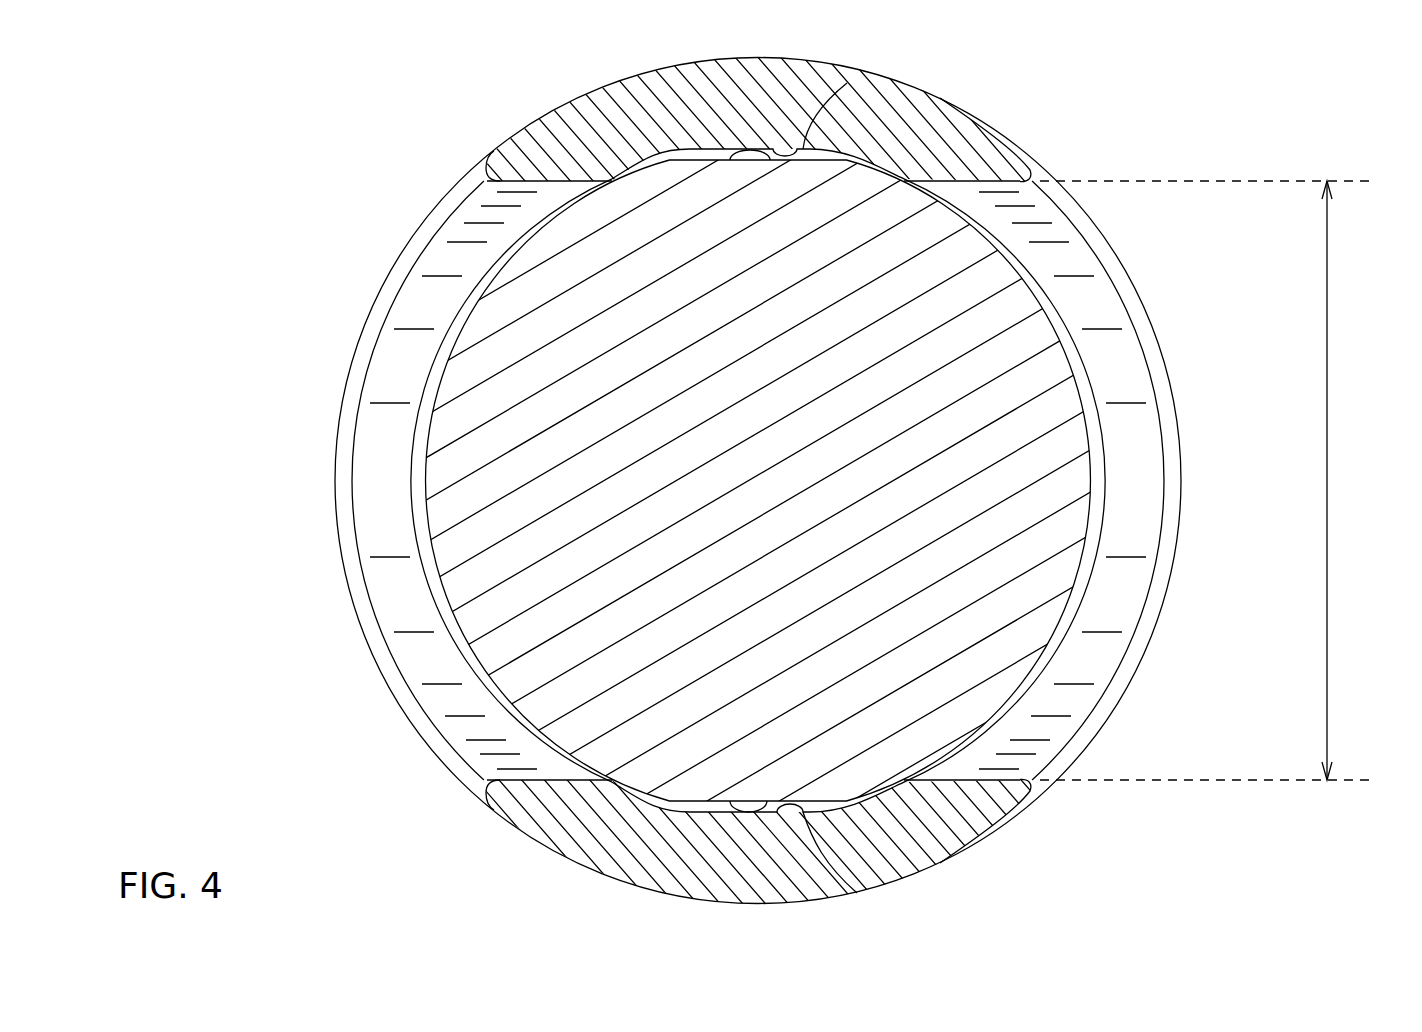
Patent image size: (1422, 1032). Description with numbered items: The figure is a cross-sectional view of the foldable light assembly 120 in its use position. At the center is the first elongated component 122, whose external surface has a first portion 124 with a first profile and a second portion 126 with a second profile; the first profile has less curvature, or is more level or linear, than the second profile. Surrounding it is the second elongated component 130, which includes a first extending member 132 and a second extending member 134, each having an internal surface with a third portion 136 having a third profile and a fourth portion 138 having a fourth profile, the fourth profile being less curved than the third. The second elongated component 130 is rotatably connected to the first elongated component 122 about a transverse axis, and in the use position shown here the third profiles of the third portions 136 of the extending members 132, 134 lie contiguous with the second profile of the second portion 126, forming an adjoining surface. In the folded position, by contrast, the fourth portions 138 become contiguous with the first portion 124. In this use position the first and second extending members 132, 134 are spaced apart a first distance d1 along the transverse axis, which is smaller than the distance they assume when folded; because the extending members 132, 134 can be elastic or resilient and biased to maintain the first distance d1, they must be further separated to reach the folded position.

The cable assembly 120 is at (393, 60).
The first elongated component 122 is at (480, 468).
The first portion 124 is at (768, 153).
The second portion 126 is at (479, 662).
The second elongated component 130 is at (402, 355).
The first extending member 132 is at (590, 117).
The second extending member 134 is at (590, 848).
The third portion 136 is at (847, 83).
The fourth portion 138 is at (505, 181).
The first distance d1 is at (1328, 468).